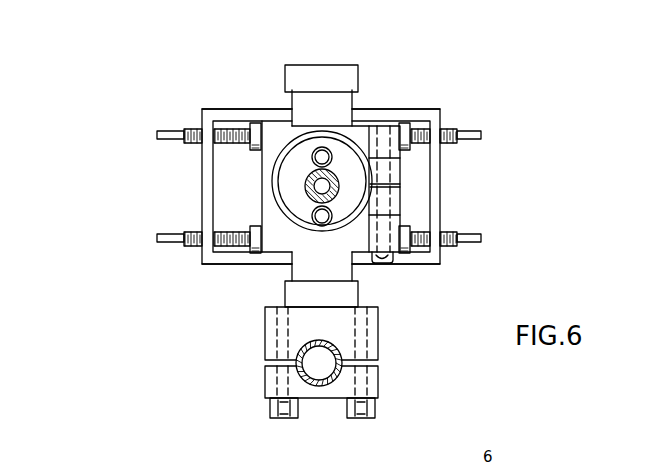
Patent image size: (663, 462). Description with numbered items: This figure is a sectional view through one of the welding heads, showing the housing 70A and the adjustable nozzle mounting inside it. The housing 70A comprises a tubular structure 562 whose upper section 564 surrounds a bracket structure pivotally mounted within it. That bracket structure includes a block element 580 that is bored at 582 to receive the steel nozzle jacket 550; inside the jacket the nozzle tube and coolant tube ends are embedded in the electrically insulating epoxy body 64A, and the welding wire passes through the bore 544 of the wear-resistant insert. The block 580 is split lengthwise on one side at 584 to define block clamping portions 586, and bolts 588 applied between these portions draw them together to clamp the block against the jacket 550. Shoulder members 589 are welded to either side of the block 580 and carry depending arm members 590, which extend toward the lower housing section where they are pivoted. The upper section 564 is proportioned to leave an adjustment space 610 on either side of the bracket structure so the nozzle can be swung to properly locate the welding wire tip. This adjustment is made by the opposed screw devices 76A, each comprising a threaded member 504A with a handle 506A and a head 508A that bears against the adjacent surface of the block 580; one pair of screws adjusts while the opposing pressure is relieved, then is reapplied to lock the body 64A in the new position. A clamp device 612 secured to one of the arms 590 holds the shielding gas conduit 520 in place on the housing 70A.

The conduit 520 is at (322, 386).
The bore 544 is at (334, 189).
The jacket 550 is at (292, 222).
The tubular structure 562 is at (201, 212).
The upper section 564 is at (212, 258).
The block element 580 is at (402, 120).
The bore 582 is at (372, 133).
The split 584 is at (401, 184).
The block clamping portions 586 is at (401, 158).
The bolts 588 is at (393, 263).
The shoulder members 589 is at (305, 100).
The arm members 590 is at (328, 77).
The adjustment space 610 is at (232, 170).
The clamp device 612 is at (263, 395).
The body 64A is at (293, 190).
The housing 70A is at (446, 107).
The screw devices 76A is at (143, 128).
The threaded member 504A is at (212, 149).
The handle 506A is at (481, 135).
The head 508A is at (253, 123).